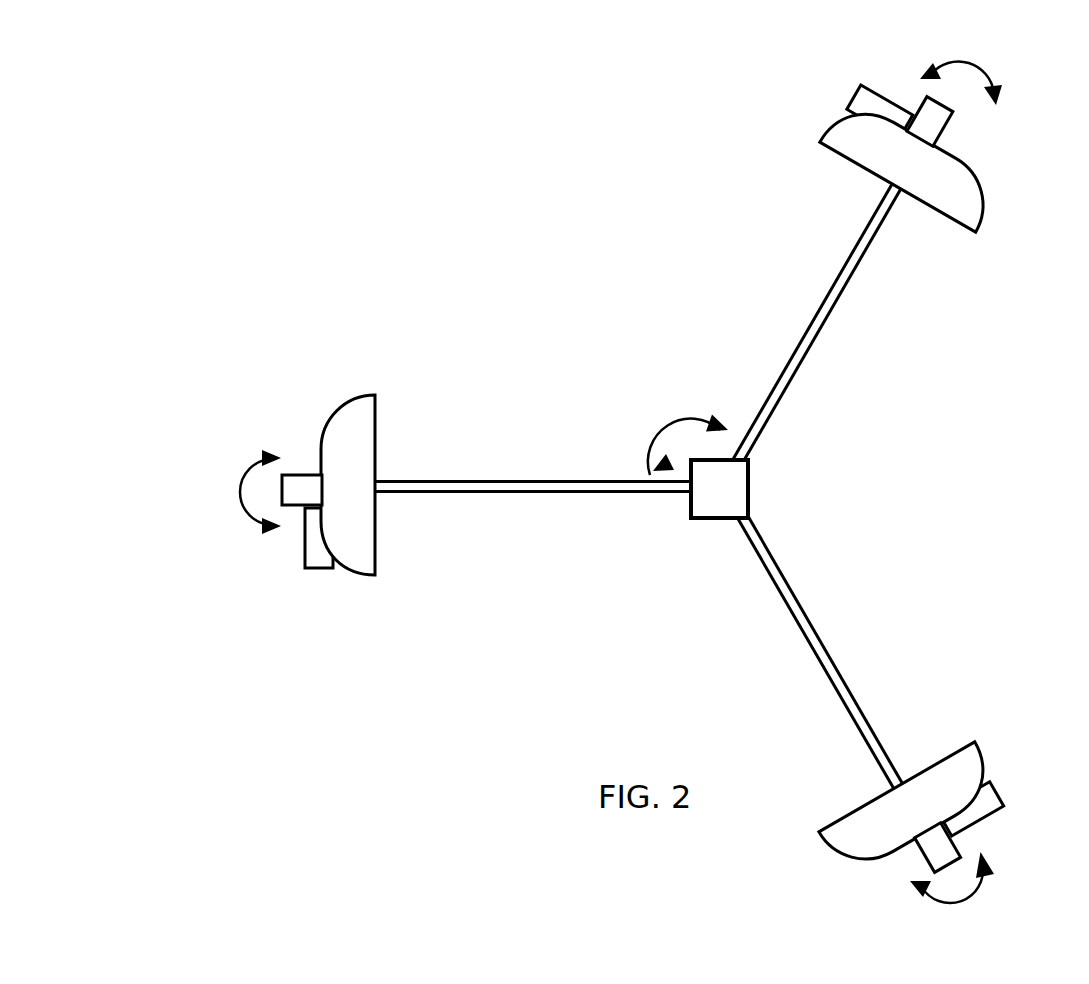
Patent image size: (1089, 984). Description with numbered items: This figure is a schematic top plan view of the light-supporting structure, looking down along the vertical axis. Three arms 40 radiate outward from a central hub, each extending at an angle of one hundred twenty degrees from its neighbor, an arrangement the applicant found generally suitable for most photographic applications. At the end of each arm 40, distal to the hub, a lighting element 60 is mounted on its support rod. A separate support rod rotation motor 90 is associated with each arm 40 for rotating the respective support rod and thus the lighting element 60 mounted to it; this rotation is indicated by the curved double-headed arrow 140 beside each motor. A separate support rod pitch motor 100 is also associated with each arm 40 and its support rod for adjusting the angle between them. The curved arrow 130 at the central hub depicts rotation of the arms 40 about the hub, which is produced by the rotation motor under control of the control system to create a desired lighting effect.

The arm 40 is at (552, 497).
The lighting element 60 is at (357, 532).
The support rod rotation motor 90 is at (302, 495).
The support rod pitch motor 100 is at (322, 553).
The arrow 130 is at (675, 420).
The arrow 140 is at (240, 490).